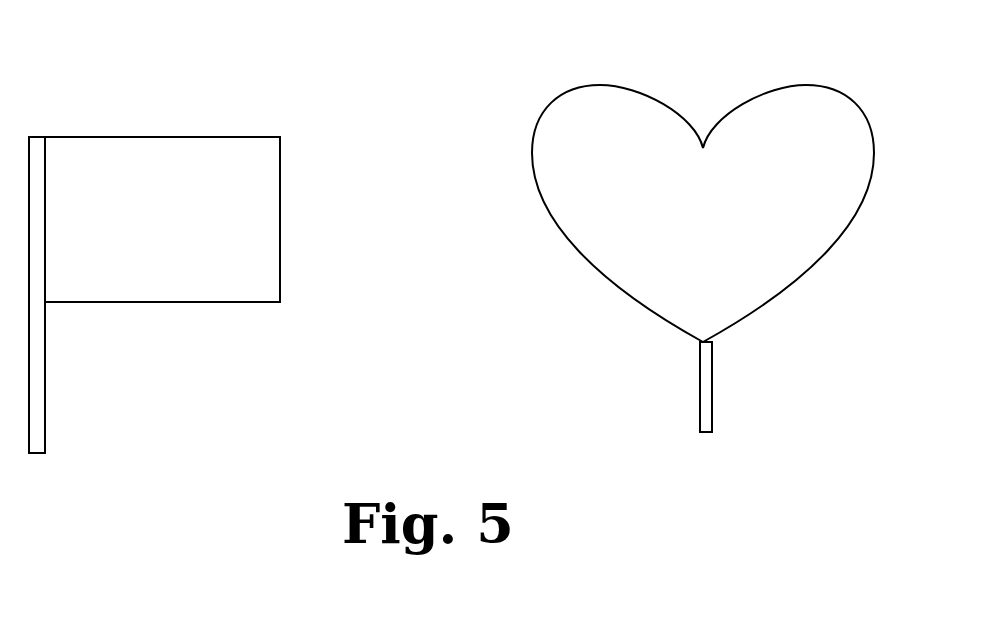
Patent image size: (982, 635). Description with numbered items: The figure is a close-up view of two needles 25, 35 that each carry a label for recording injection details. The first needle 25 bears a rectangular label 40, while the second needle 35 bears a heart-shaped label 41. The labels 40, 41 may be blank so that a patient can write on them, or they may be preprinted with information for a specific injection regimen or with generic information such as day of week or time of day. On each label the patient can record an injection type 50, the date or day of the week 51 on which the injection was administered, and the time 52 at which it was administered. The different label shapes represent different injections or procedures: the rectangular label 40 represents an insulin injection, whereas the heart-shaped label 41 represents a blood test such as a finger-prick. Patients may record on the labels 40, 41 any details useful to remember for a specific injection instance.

The needle 25 is at (66, 395).
The rectangular label 40 is at (111, 124).
The heart-shaped label 41 is at (835, 72).
The needle 35 is at (728, 392).
The injection type 50 is at (616, 162).
The date or day of the week 51 is at (624, 210).
The time 52 is at (626, 239).